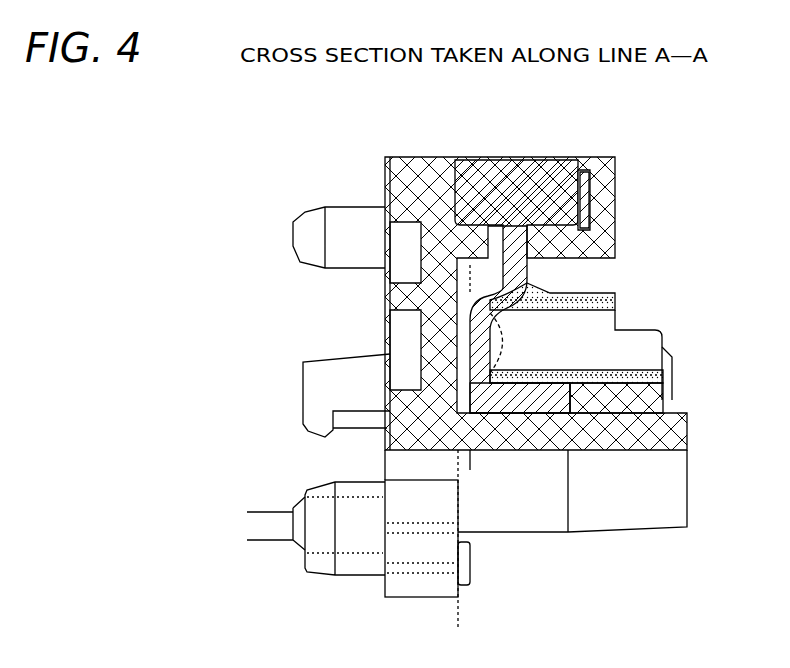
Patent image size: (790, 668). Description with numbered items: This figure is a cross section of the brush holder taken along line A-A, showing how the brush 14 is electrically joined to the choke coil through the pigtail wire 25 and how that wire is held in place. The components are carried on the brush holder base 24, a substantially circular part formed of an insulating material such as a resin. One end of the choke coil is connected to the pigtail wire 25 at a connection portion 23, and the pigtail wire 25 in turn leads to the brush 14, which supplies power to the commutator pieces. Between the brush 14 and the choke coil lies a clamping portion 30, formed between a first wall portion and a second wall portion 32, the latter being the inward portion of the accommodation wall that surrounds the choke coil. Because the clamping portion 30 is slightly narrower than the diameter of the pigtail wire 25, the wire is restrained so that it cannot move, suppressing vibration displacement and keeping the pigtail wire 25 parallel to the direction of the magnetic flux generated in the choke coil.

The brush 14 is at (551, 160).
The connection portion 23 is at (613, 400).
The brush holder base 24 is at (403, 593).
The pigtail wire 25 is at (513, 400).
The clamping portion 30 is at (410, 338).
The second wall portion 32 is at (613, 330).